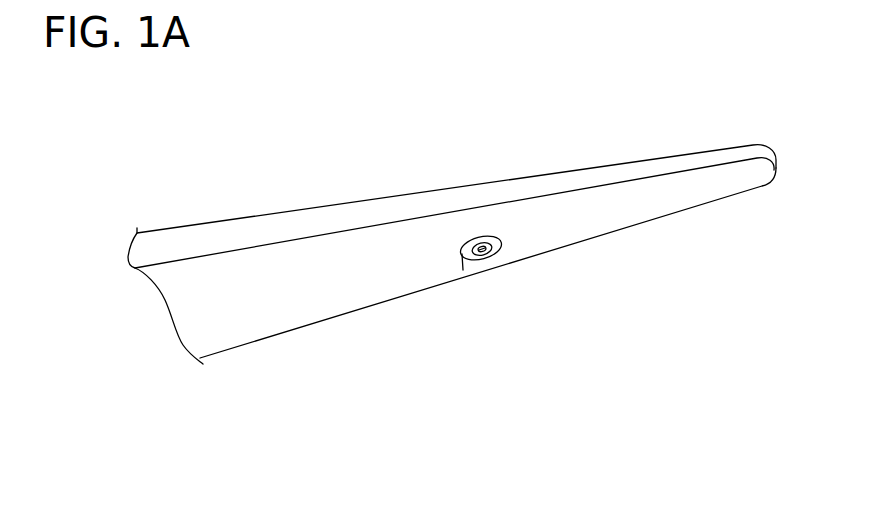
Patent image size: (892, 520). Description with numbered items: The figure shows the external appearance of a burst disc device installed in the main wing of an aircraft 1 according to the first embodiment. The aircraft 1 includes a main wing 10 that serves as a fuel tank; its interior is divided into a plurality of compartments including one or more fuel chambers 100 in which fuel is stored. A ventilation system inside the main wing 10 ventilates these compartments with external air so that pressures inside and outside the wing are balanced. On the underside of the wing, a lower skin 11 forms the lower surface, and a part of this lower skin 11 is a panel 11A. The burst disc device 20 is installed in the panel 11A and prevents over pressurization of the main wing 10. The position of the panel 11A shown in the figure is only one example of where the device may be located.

The aircraft 1 is at (452, 265).
The fuel chamber 100 is at (308, 263).
The main wing 10 is at (423, 192).
The lower skin 11 is at (277, 327).
The panel 11A is at (463, 270).
The burst disc device 20 is at (493, 256).